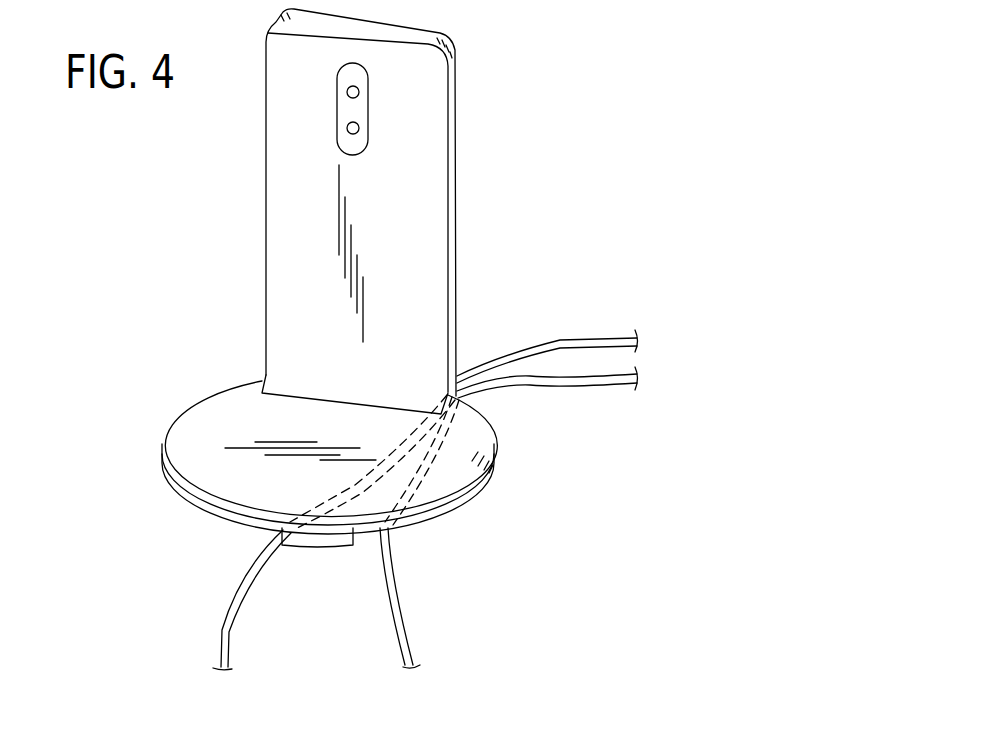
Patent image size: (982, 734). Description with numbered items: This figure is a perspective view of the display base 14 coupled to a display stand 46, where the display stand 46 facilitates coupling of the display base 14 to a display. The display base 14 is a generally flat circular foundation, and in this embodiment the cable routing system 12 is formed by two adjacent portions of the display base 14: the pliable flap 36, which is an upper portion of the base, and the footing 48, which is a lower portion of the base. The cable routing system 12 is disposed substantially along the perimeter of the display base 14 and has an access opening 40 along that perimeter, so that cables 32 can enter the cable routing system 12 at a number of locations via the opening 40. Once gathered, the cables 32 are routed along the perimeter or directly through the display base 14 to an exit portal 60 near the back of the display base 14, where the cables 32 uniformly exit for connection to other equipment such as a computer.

The cable routing system 12 is at (298, 457).
The display base 14 is at (181, 360).
The cable 32 is at (585, 333).
The pliable flap 36 is at (447, 499).
The opening 40 is at (353, 545).
The display stand 46 is at (527, 77).
The footing 48 is at (420, 527).
The exit portal 60 is at (478, 332).